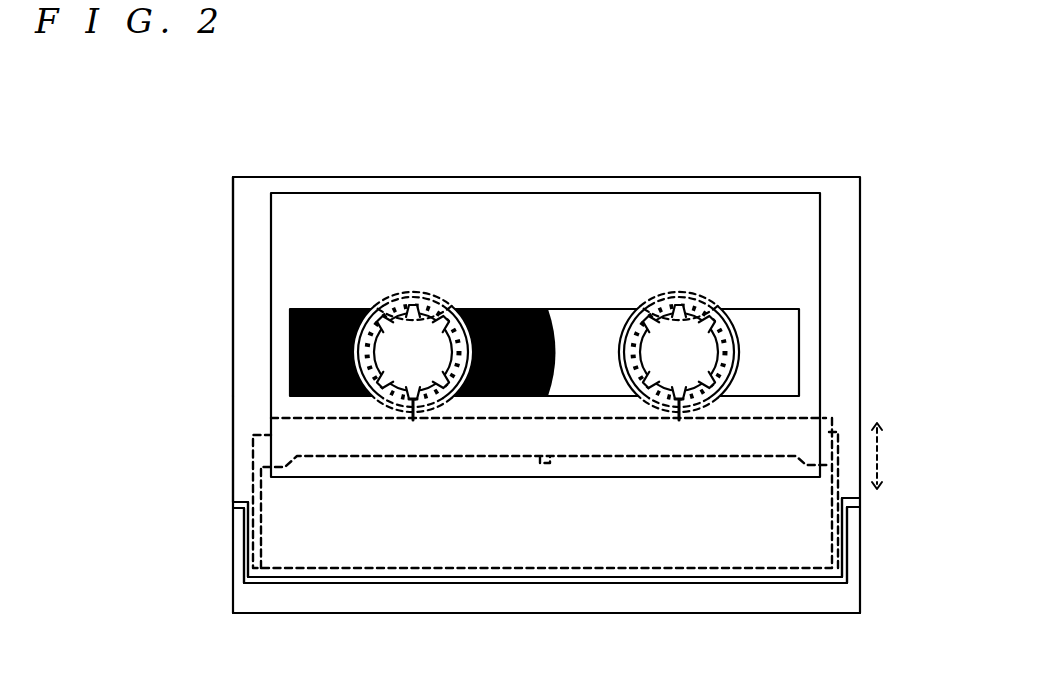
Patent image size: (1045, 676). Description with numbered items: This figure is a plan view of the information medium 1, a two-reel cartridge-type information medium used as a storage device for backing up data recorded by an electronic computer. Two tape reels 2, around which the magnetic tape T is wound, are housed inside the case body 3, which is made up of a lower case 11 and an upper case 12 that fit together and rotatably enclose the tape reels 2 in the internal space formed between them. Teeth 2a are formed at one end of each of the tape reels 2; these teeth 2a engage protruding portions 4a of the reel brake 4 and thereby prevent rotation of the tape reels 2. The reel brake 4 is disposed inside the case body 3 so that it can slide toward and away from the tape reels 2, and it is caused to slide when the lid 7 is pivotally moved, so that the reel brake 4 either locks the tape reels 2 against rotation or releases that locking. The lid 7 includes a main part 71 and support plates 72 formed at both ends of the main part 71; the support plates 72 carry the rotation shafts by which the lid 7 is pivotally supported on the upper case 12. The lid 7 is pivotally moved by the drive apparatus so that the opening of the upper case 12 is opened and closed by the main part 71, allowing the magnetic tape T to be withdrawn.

The information medium 1 is at (545, 330).
The tape reels 2 is at (455, 308).
The teeth 2a is at (380, 304).
The magnetic tape T is at (522, 308).
The case body 3 is at (219, 283).
The upper case 12 is at (240, 331).
The lower case 11 is at (240, 372).
The reel brake 4 is at (526, 465).
The protruding portions 4a is at (410, 427).
The lid 7 is at (879, 594).
The main part 71 is at (553, 614).
The support plates 72 is at (242, 550).